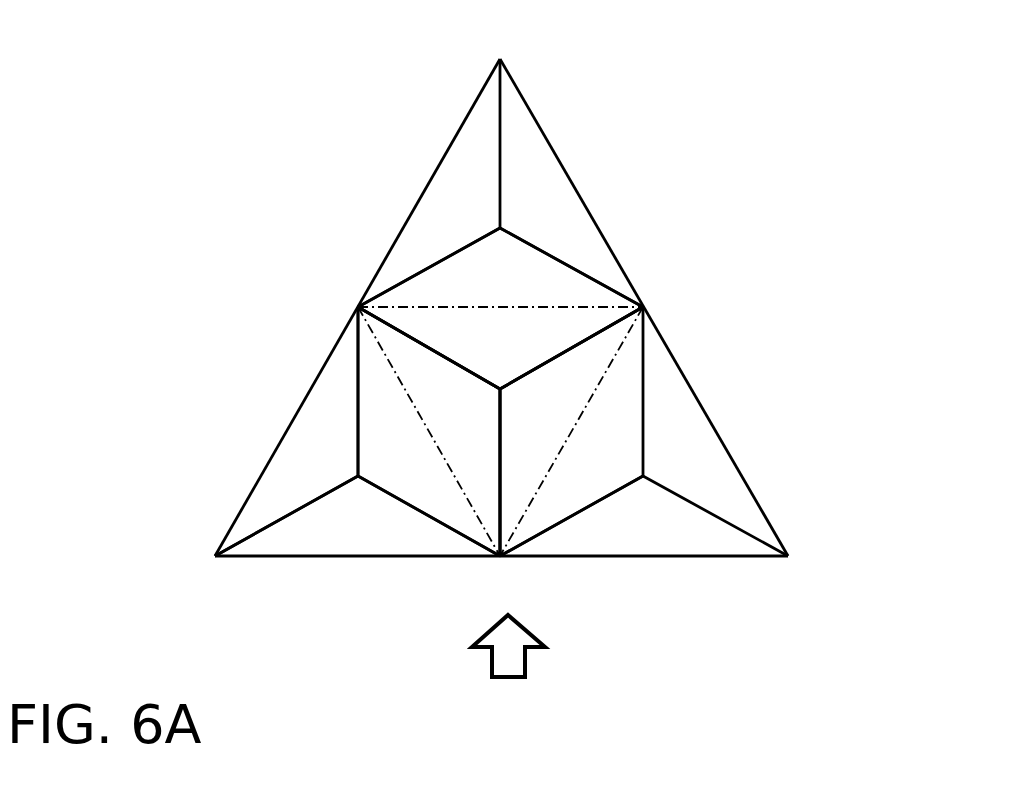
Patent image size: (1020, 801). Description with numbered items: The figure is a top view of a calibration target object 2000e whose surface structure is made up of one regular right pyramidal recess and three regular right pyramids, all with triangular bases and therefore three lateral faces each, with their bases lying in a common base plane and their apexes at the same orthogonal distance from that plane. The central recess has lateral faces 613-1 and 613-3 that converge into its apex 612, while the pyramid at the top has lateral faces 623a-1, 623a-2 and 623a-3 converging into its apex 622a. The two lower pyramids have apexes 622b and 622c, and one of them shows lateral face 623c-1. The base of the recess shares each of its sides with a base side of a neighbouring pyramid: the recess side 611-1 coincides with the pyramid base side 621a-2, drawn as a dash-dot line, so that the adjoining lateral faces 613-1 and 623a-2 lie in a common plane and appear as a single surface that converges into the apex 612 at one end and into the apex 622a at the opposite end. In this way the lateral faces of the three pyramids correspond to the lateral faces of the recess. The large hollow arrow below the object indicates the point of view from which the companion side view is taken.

The calibration target object 2000e is at (160, 71).
The lateral face 623a-3 is at (497, 222).
The lateral face 623a-1 is at (585, 224).
The apex 622a is at (496, 229).
The base side 621a-2 is at (498, 308).
The lateral face 623a-2 is at (580, 298).
The base side 611-1 is at (506, 307).
The lateral face 613-1 is at (558, 353).
The lateral face 613-3 is at (490, 417).
The apex 612 is at (502, 391).
The lateral face 623c-1 is at (437, 476).
The apex 622c is at (357, 479).
The apex 622b is at (643, 479).